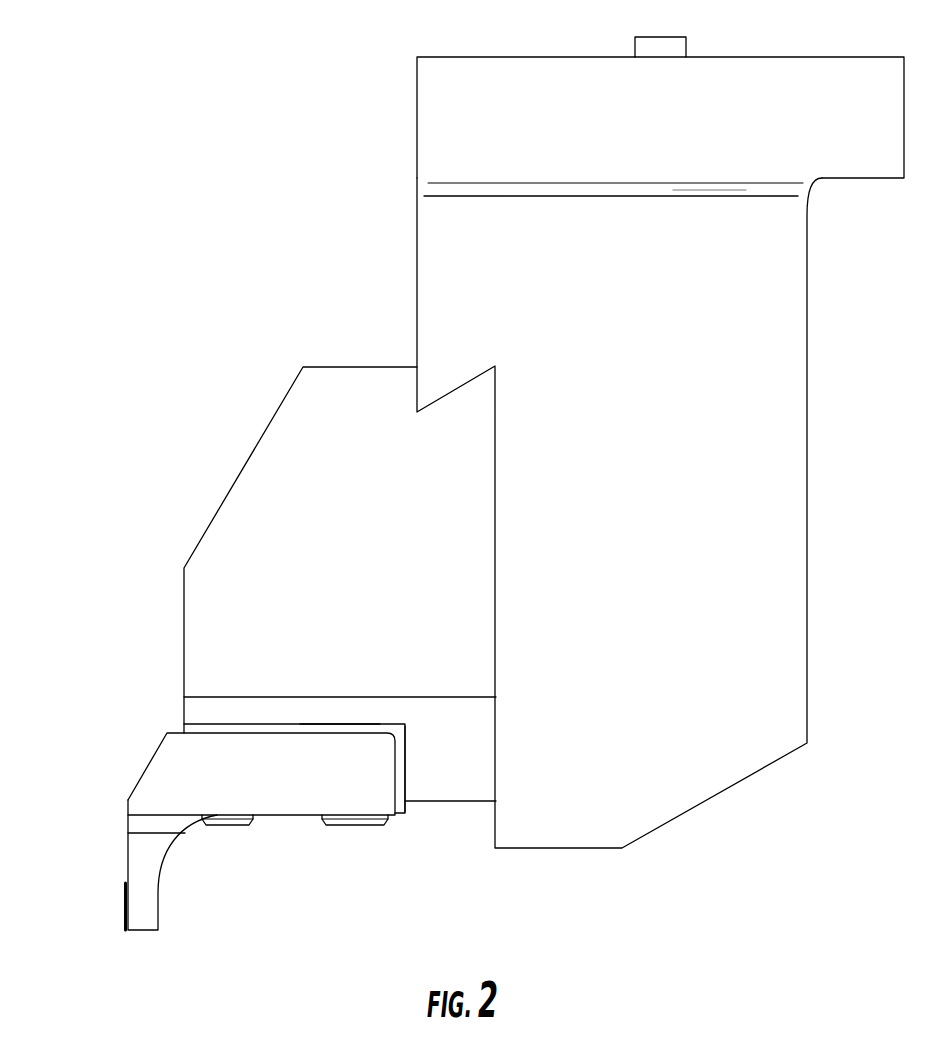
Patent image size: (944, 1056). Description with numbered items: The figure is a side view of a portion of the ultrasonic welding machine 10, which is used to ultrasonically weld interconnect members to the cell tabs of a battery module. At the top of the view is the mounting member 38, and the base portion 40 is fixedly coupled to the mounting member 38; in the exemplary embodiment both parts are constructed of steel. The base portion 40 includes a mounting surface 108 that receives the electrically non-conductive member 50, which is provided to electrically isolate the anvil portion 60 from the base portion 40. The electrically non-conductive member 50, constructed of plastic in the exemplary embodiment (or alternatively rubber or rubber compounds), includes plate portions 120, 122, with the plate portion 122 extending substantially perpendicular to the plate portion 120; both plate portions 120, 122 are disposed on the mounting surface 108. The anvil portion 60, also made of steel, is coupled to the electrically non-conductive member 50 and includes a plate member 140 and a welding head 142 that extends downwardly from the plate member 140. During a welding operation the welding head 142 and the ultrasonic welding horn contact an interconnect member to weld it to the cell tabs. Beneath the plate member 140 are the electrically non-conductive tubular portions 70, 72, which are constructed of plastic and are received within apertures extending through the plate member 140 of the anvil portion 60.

The ultrasonic welding machine 10 is at (224, 236).
The mounting member 38 is at (427, 108).
The base portion 40 is at (278, 438).
The electrically non-conductive member 50 is at (180, 727).
The anvil portion 60 is at (131, 779).
The electrically non-conductive tubular portion 70 is at (233, 825).
The electrically non-conductive tubular portion 72 is at (353, 826).
The mounting surface 108 is at (334, 730).
The plate portion 120 is at (368, 731).
The plate portion 122 is at (400, 770).
The plate member 140 is at (290, 797).
The welding head 142 is at (137, 898).